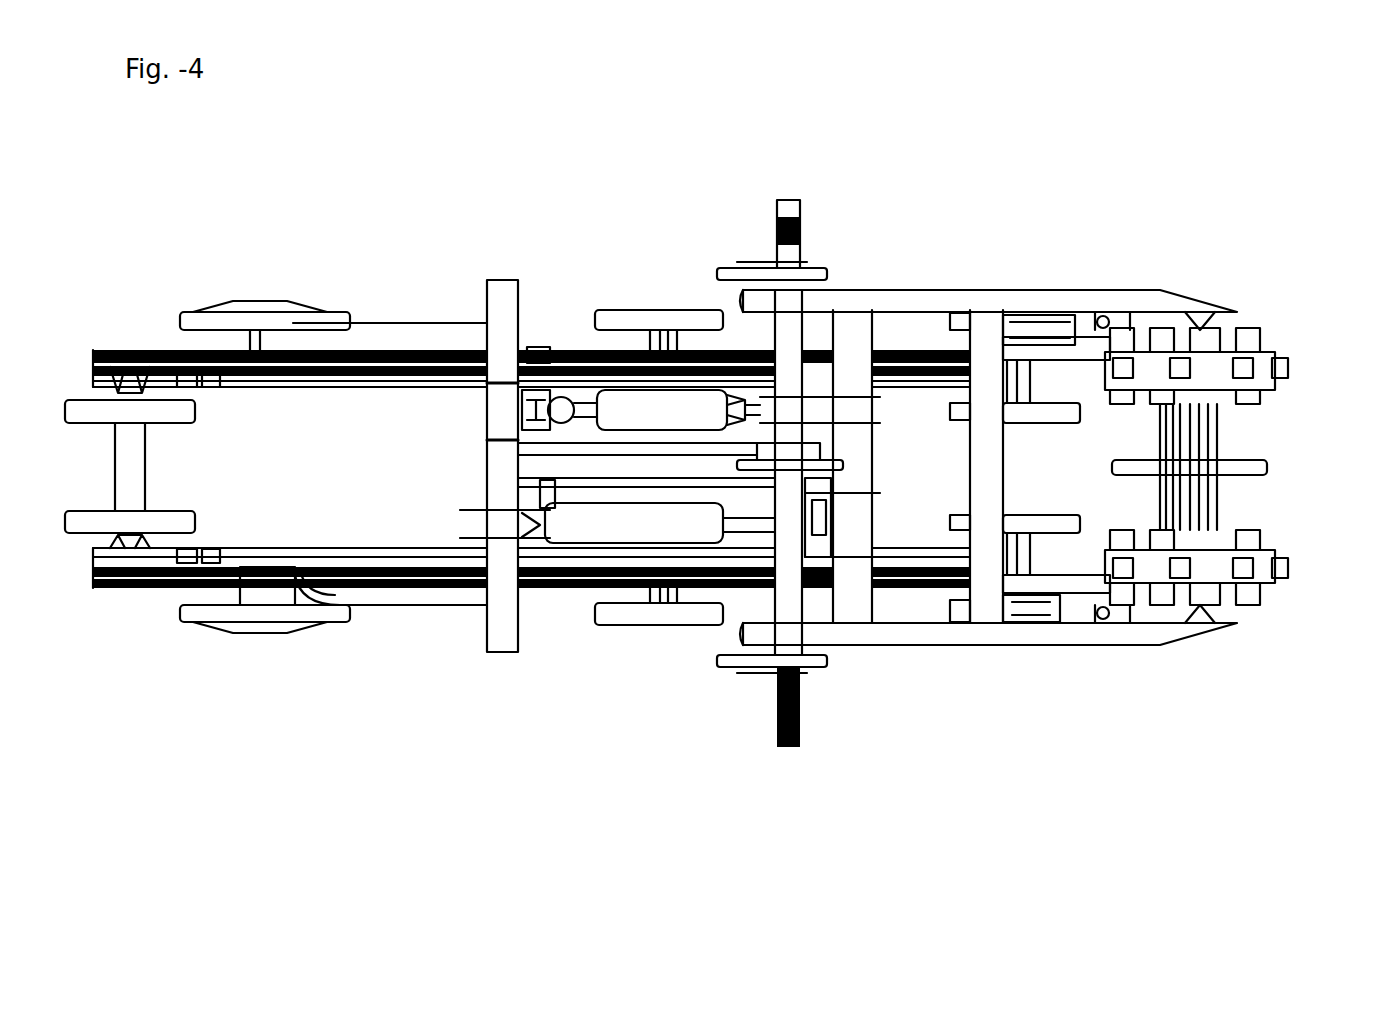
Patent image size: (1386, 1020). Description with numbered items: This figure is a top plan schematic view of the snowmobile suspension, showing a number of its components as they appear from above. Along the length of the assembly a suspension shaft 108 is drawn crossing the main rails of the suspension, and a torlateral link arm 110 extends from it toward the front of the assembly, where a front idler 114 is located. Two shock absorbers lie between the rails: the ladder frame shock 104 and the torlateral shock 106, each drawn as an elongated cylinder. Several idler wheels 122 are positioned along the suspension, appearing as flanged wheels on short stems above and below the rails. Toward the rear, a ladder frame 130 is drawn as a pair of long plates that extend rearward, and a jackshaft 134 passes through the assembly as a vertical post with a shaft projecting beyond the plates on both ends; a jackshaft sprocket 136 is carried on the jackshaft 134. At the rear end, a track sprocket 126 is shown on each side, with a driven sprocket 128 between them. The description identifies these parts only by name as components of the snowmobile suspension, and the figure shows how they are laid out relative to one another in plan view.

The ladder frame shock 104 is at (632, 412).
The torlateral shock 106 is at (593, 527).
The suspension shaft 108 is at (498, 288).
The torlateral link arm 110 is at (338, 335).
The front idler 114 is at (249, 312).
The idler wheel 122 is at (600, 318).
The track sprocket 126 is at (1257, 370).
The driven sprocket 128 is at (1253, 460).
The ladder frame 130 is at (1168, 302).
The jackshaft 134 is at (788, 598).
The jackshaft sprocket 136 is at (828, 466).